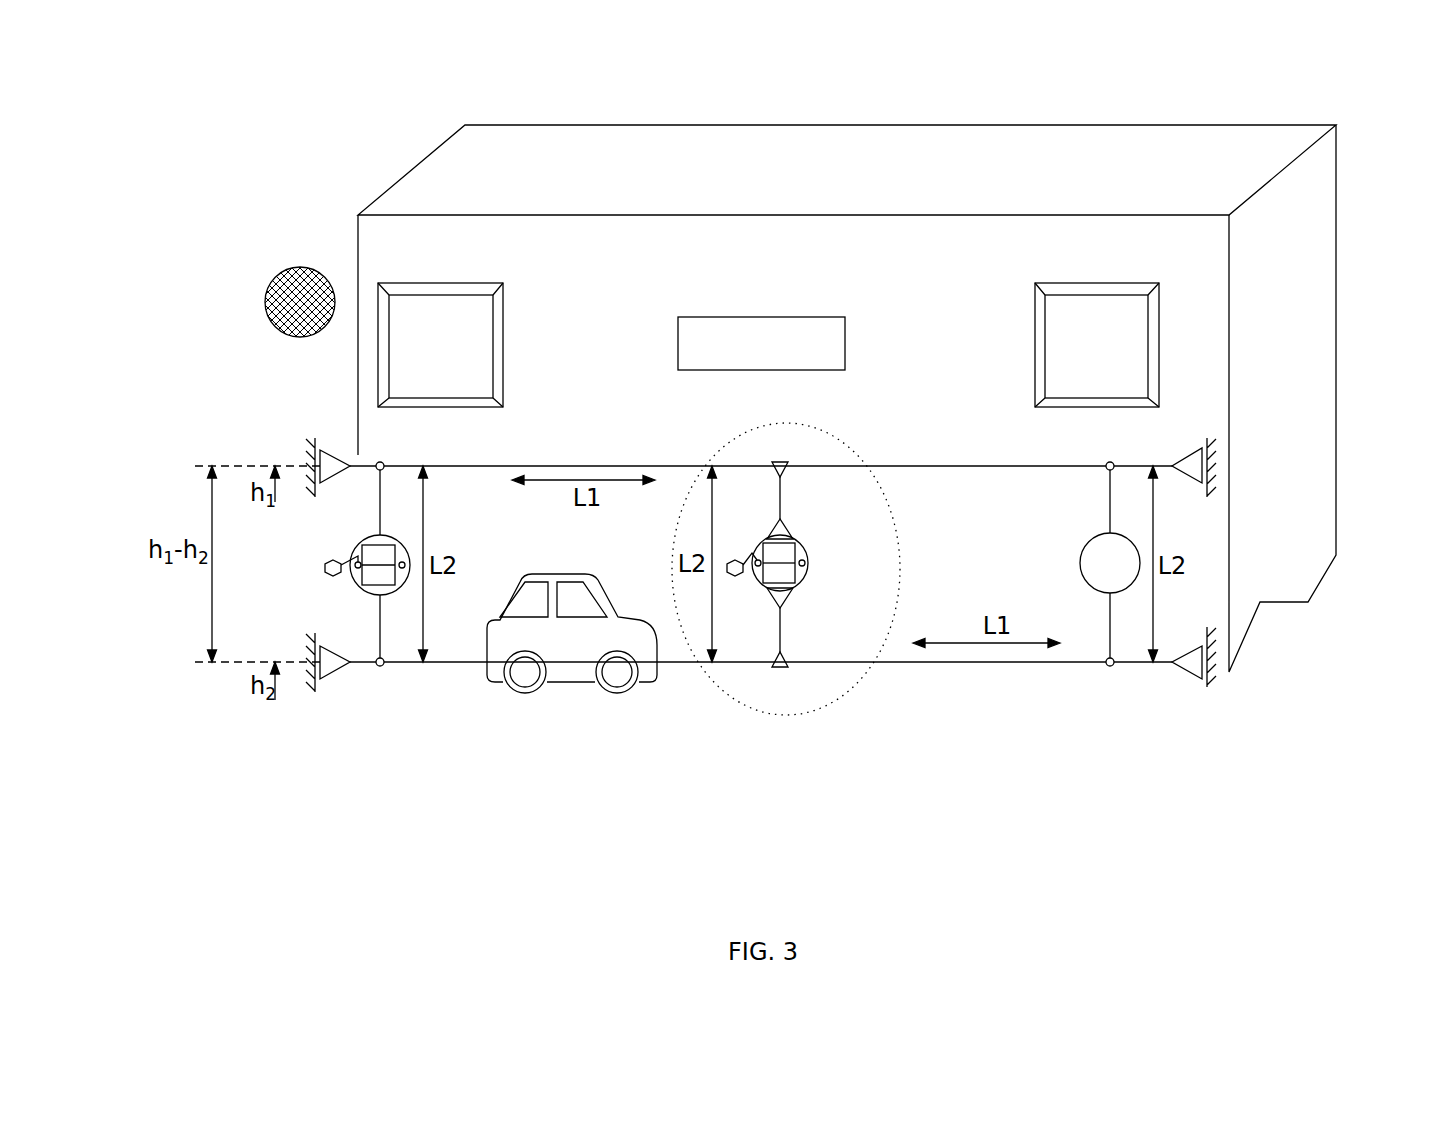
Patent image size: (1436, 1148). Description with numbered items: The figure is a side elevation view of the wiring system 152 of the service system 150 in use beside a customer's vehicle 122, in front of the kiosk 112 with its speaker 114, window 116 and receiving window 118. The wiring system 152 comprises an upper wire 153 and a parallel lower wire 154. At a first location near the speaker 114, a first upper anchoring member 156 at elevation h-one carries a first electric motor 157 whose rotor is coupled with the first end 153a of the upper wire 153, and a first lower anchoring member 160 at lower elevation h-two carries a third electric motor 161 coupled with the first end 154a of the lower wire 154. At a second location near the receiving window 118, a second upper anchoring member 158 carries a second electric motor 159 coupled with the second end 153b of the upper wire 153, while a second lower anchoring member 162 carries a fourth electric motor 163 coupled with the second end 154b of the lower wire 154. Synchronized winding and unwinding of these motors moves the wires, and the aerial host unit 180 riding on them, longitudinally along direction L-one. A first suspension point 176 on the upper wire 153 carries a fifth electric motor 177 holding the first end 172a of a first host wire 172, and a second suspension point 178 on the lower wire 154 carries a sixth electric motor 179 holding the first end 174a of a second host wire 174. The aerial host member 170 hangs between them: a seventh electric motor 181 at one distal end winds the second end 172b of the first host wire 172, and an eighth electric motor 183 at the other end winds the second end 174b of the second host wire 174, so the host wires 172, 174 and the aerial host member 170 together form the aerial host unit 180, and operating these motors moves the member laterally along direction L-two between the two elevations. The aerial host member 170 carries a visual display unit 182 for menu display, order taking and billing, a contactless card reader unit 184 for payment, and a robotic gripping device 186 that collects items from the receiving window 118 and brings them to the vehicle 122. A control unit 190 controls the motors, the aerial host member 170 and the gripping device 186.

The kiosk 112 is at (947, 146).
The speaker 114 is at (266, 300).
The window 116 is at (437, 292).
The receiving window 118 is at (1095, 292).
The customer's vehicle 122 is at (552, 651).
The service system 150 is at (761, 394).
The wiring system 152 is at (761, 394).
The upper wire 153 is at (985, 456).
The first end of the upper wire 153a is at (371, 462).
The second end of the upper wire 153b is at (1122, 464).
The lower wire 154 is at (953, 676).
The first end of the lower wire 154a is at (370, 668).
The second end of the lower wire 154b is at (1123, 667).
The first upper anchoring member 156 is at (310, 440).
The first electric motor 157 is at (340, 457).
The second upper anchoring member 158 is at (1213, 440).
The second electric motor 159 is at (1190, 452).
The first lower anchoring member 160 is at (315, 680).
The third electric motor 161 is at (338, 670).
The second lower anchoring member 162 is at (1213, 627).
The fourth electric motor 163 is at (1190, 675).
The aerial host member 170 is at (362, 548).
The first host wire 172 is at (789, 486).
The first end of the first host wire 172a is at (780, 497).
The second end of the first host wire 172b is at (782, 497).
The second host wire 174 is at (778, 636).
The first end of the second host wire 174a is at (766, 630).
The second end of the second host wire 174b is at (783, 635).
The first suspension point 176 is at (788, 462).
The fifth electric motor 177 is at (785, 470).
The second suspension point 178 is at (780, 668).
The sixth electric motor 179 is at (788, 666).
The aerial host unit 180 is at (783, 414).
The seventh electric motor 181 is at (788, 528).
The visual display unit 182 is at (796, 540).
The eighth electric motor 183 is at (790, 610).
The contactless card reader unit 184 is at (796, 590).
The robotic gripping device 186 is at (737, 560).
The control unit 190 is at (742, 356).